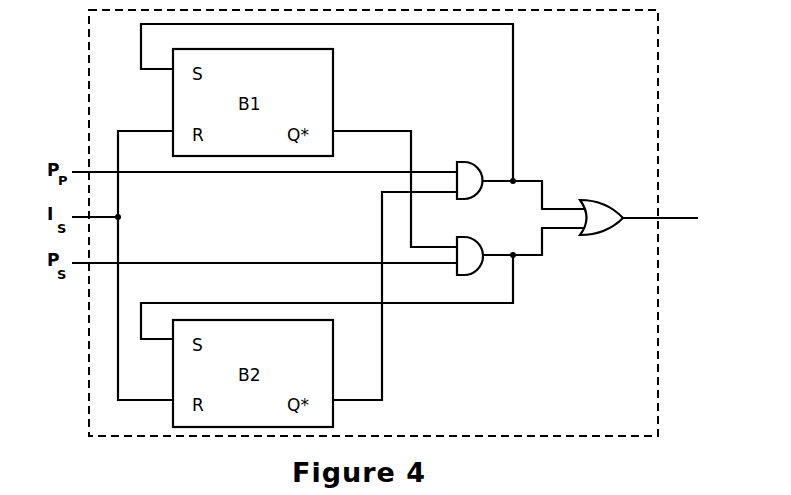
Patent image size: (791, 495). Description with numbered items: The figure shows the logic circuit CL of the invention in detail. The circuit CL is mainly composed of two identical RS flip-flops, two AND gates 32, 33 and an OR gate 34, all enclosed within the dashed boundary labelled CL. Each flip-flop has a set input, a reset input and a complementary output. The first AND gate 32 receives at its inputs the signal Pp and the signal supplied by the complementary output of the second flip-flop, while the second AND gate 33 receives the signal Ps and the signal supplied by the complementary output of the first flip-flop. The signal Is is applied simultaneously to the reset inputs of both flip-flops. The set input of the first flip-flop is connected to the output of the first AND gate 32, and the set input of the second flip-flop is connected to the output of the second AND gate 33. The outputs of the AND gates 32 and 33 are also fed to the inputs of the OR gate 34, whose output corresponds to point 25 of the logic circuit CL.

The logic circuit CL is at (404, 223).
The first AND gate 32 is at (481, 162).
The second AND gate 33 is at (481, 237).
The OR gate 34 is at (610, 201).
The point 25 is at (663, 218).